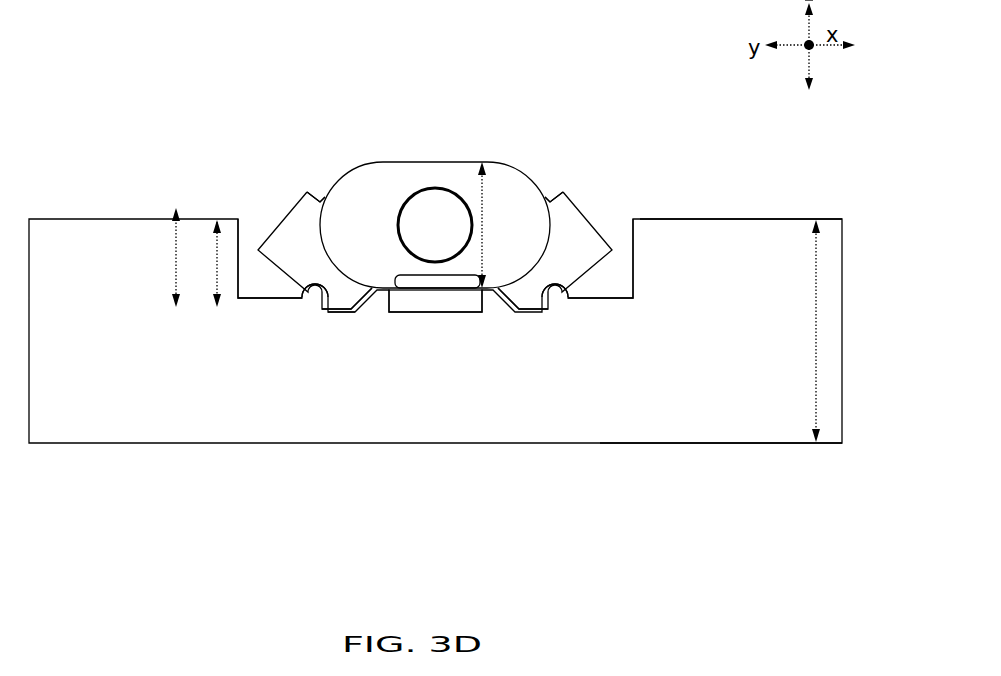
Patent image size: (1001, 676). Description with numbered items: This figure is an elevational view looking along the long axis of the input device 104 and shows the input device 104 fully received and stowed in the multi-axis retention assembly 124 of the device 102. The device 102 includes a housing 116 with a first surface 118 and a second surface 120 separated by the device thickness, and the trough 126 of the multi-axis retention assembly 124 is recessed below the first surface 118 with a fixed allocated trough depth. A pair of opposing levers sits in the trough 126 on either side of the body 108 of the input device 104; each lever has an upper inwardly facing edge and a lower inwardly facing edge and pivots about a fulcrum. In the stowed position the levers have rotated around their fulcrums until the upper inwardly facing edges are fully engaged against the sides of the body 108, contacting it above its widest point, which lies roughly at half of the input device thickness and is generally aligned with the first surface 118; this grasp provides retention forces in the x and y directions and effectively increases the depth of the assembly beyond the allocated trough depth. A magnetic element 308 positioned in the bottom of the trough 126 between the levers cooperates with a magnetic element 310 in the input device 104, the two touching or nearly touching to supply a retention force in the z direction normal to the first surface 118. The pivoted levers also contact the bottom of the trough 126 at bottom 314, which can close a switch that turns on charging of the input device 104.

The device 102 is at (336, 515).
The input device 104 is at (509, 164).
The body 108 is at (345, 167).
The housing 116 is at (60, 448).
The first surface 118 is at (802, 219).
The second surface 120 is at (773, 446).
The multi-axis retention assembly 124 is at (305, 107).
The trough 126 is at (250, 236).
The magnetic element 308 is at (415, 313).
The magnetic element 310 is at (393, 279).
The bottom of the trough contact 314 is at (333, 312).